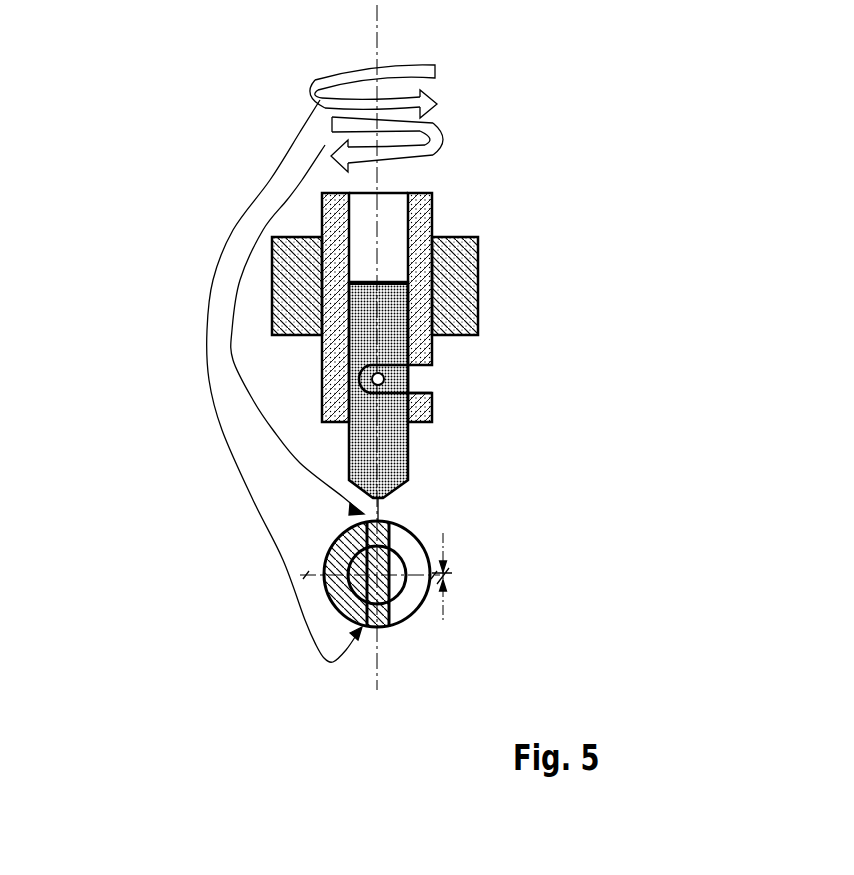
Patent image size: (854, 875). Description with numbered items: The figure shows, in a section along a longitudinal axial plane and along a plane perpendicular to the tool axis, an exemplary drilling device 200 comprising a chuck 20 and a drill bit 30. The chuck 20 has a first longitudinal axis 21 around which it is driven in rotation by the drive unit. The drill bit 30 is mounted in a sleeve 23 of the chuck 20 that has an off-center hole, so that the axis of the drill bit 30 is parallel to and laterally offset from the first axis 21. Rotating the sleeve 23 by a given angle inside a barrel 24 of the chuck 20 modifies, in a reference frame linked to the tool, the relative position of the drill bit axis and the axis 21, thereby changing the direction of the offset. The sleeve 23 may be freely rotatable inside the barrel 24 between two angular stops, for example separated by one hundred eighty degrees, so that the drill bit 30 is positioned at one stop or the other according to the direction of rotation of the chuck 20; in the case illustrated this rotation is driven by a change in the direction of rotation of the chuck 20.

The drilling device 200 is at (142, 237).
The first longitudinal axis 21 is at (378, 33).
The chuck 20 is at (457, 421).
The sleeve 23 is at (497, 343).
The barrel 24 is at (478, 288).
The drill bit 30 is at (397, 455).